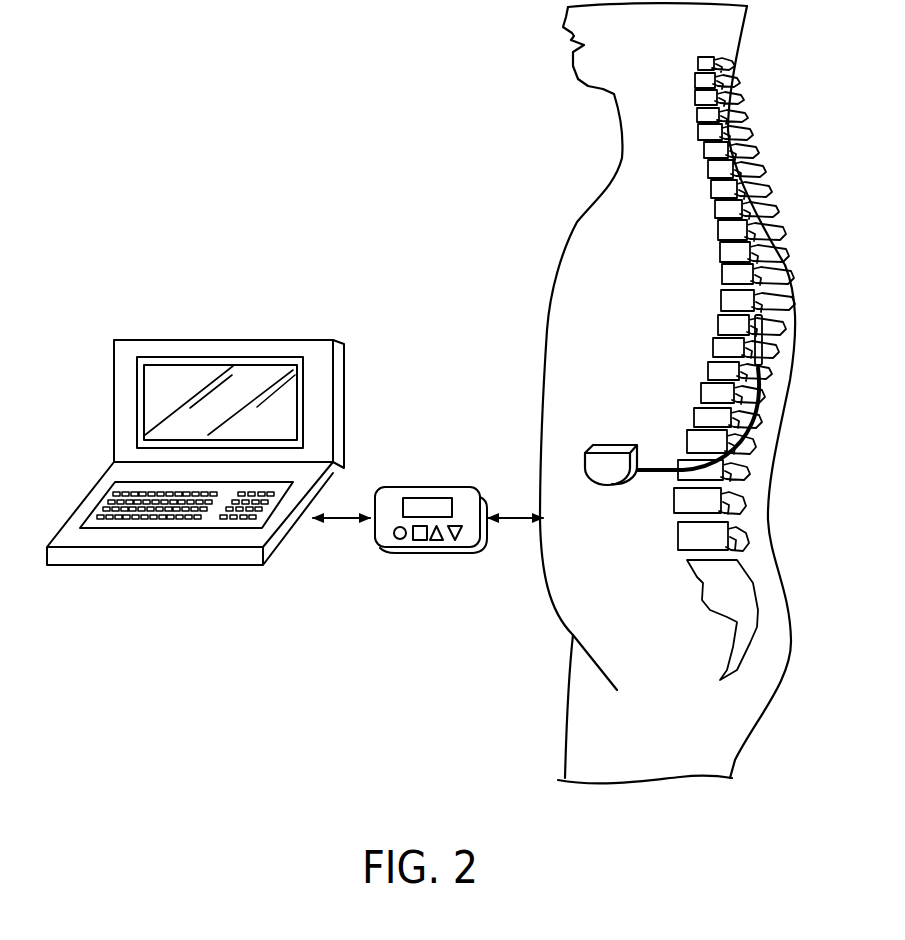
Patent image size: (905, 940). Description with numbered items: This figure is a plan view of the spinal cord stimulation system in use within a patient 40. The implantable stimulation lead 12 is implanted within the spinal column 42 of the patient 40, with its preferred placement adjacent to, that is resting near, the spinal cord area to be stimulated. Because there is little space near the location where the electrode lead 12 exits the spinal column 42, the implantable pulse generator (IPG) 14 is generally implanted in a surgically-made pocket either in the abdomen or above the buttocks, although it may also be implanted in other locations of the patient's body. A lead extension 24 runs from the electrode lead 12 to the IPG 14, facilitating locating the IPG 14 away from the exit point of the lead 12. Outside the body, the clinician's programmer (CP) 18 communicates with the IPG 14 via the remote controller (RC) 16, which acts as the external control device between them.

The clinician's programmer 18 is at (211, 334).
The remote controller 16 is at (455, 466).
The patient 40 is at (558, 257).
The spinal column 42 is at (720, 315).
The implantable stimulation lead 12 is at (772, 346).
The lead extension 24 is at (758, 422).
The implantable pulse generator 14 is at (612, 478).